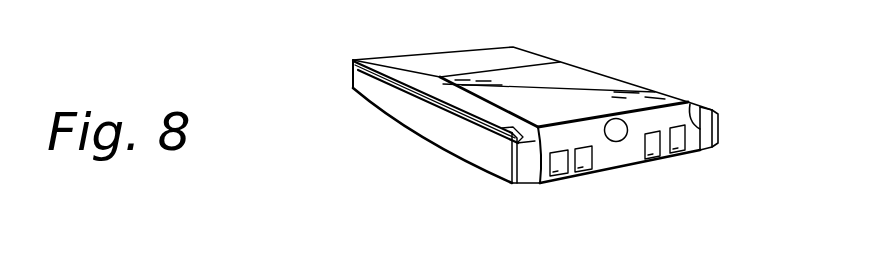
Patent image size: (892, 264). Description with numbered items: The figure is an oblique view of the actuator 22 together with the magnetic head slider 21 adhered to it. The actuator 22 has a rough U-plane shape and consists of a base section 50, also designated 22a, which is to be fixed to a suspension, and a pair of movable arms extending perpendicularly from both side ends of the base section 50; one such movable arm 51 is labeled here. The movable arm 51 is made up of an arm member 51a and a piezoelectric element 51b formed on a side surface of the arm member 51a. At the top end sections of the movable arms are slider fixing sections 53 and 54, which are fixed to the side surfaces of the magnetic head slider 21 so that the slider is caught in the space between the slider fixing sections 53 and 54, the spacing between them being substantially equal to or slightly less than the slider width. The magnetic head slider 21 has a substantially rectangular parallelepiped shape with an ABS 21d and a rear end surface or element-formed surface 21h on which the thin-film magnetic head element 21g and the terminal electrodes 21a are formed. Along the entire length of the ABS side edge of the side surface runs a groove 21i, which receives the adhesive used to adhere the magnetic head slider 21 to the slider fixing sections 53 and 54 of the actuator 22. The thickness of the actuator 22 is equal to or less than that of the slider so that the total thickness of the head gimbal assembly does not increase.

The magnetic head slider 21 is at (655, 81).
The terminal electrodes 21a is at (580, 170).
The ABS 21d is at (582, 78).
The thin-film magnetic head element 21g is at (618, 142).
The element-formed surface 21h is at (638, 156).
The groove 21i is at (470, 105).
The actuator 22 is at (547, 63).
The base section 22a is at (437, 63).
The base section 50 is at (536, 49).
The movable arm 51 is at (378, 116).
The arm member 51a is at (436, 91).
The piezoelectric element 51b is at (416, 100).
The slider fixing section 53 is at (523, 170).
The slider fixing section 54 is at (712, 149).